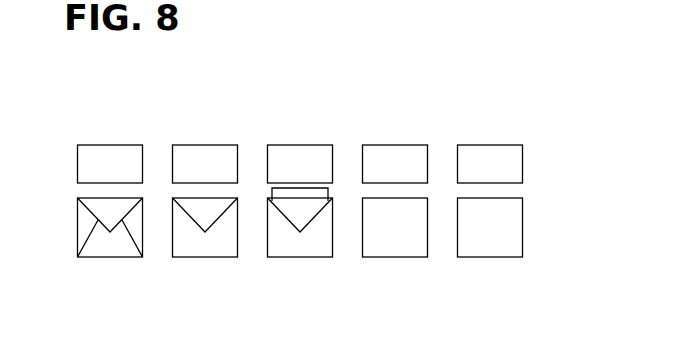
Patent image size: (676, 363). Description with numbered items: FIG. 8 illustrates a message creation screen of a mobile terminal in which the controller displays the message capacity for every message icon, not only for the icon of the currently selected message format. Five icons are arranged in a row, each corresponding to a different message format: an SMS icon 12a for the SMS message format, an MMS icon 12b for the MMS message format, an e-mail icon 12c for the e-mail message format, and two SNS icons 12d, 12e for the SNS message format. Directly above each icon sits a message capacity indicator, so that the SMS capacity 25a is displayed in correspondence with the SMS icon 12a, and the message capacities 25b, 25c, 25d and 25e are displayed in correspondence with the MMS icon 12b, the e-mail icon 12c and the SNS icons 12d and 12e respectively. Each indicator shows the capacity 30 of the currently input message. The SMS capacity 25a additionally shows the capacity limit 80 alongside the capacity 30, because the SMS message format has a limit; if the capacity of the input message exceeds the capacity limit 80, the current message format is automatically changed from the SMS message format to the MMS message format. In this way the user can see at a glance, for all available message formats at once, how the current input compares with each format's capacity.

The SMS capacity 25a is at (110, 129).
The message capacity 25b is at (205, 98).
The message capacity 25c is at (300, 98).
The message capacity 25d is at (395, 98).
The message capacity 25e is at (490, 98).
The SMS icon 12a is at (110, 258).
The MMS icon 12b is at (205, 258).
The e-mail icon 12c is at (300, 258).
The SNS icon 12d is at (395, 258).
The SNS icon 12e is at (490, 258).
The capacity of the currently input message 30 is at (300, 129).
The capacity limit 80 is at (110, 164).